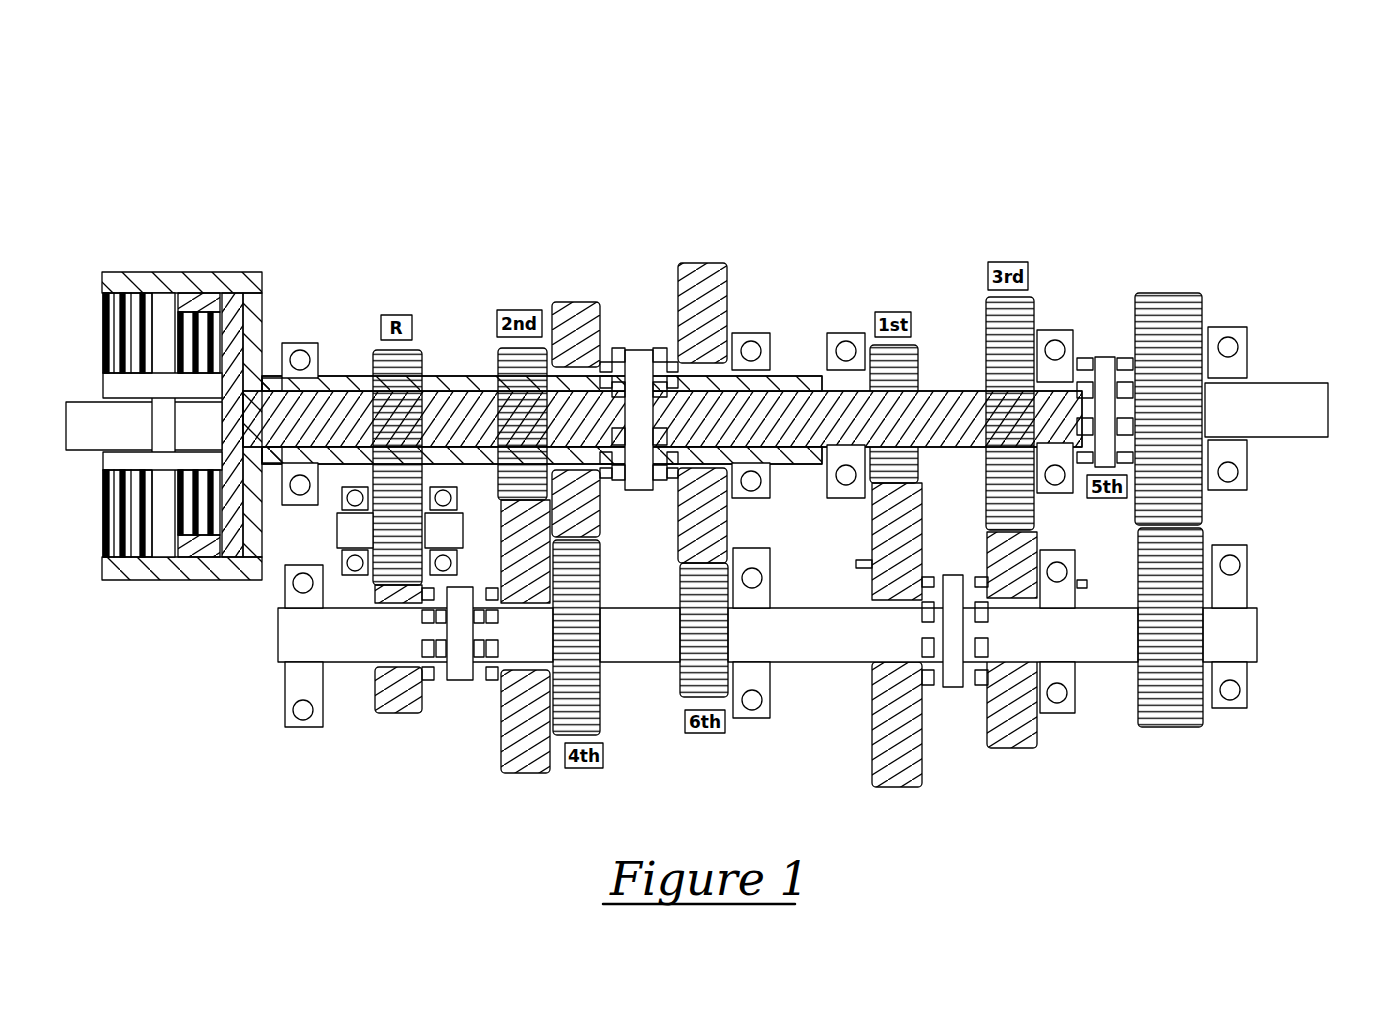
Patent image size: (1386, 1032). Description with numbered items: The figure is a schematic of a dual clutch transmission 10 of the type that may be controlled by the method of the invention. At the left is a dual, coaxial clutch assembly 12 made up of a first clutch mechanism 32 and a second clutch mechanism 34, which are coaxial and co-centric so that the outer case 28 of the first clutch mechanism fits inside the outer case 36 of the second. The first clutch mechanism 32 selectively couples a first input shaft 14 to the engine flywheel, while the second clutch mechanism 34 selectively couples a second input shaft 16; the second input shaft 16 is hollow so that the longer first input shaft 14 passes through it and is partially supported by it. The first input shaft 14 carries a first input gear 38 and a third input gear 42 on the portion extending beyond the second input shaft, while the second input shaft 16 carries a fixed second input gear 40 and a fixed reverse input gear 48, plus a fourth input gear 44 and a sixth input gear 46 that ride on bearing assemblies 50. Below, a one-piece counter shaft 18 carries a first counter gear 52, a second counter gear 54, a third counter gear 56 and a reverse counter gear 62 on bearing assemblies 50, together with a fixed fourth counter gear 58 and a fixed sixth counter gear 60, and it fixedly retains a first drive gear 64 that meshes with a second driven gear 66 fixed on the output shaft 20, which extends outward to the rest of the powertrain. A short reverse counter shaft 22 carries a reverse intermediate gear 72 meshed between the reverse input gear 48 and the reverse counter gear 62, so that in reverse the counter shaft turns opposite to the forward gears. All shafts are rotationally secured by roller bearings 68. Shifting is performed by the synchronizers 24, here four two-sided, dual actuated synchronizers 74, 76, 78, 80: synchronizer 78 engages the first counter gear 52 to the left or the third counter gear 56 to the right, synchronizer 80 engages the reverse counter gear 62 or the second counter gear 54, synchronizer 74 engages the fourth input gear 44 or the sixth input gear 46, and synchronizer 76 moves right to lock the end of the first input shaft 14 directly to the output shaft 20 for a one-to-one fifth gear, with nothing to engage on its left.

The dual clutch transmission 10 is at (662, 302).
The dual, coaxial clutch assembly 12 is at (203, 387).
The first input shaft 14 is at (950, 390).
The second input shaft 16 is at (322, 386).
The counter shaft 18 is at (285, 640).
The output shaft 20 is at (1322, 393).
The reverse counter shaft 22 is at (280, 570).
The synchronizers 24 is at (660, 335).
The outer case 28 is at (262, 330).
The first clutch mechanism 32 is at (223, 305).
The second clutch mechanism 34 is at (143, 297).
The outer case 36 is at (262, 297).
The first input gear 38 is at (912, 345).
The second input gear 40 is at (495, 360).
The third input gear 42 is at (1034, 298).
The fourth input gear 44 is at (592, 302).
The sixth input gear 46 is at (727, 283).
The reverse input gear 48 is at (423, 360).
The bearing assemblies 50 is at (606, 480).
The first counter gear 52 is at (876, 730).
The second counter gear 54 is at (545, 770).
The third counter gear 56 is at (1010, 750).
The fourth counter gear 58 is at (602, 705).
The sixth counter gear 60 is at (680, 682).
The reverse counter gear 62 is at (385, 705).
The first drive gear 64 is at (1140, 700).
The second driven gear 66 is at (1185, 308).
The roller bearings 68 is at (770, 338).
The reverse intermediate gear 72 is at (337, 530).
The synchronizer 74 is at (640, 350).
The synchronizer 76 is at (1105, 357).
The synchronizer 78 is at (952, 690).
The synchronizer 80 is at (458, 680).